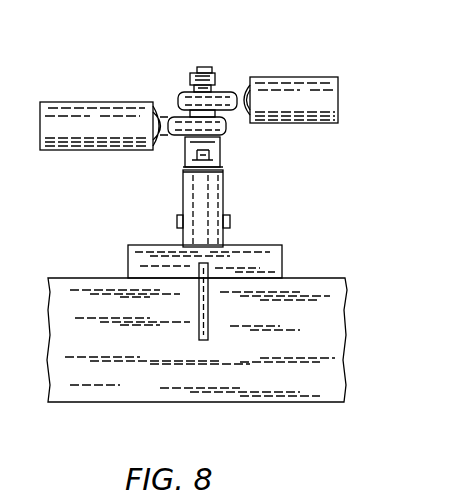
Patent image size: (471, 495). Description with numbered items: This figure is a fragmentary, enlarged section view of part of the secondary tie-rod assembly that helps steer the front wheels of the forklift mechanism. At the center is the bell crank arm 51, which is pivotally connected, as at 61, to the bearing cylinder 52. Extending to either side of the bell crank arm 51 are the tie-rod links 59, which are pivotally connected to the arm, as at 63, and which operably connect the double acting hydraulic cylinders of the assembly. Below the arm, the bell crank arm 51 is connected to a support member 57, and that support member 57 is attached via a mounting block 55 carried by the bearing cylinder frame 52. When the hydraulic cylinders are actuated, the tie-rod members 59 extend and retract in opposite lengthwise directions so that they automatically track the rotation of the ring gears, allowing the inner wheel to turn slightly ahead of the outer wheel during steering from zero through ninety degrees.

The bell crank arm 51 is at (222, 147).
The bearing cylinder frame 52 is at (332, 293).
The mounting block 55 is at (257, 258).
The support member 57 is at (212, 192).
The links 59 is at (95, 115).
The pivotal connection 61 is at (215, 77).
The pivotal connection 63 is at (232, 85).